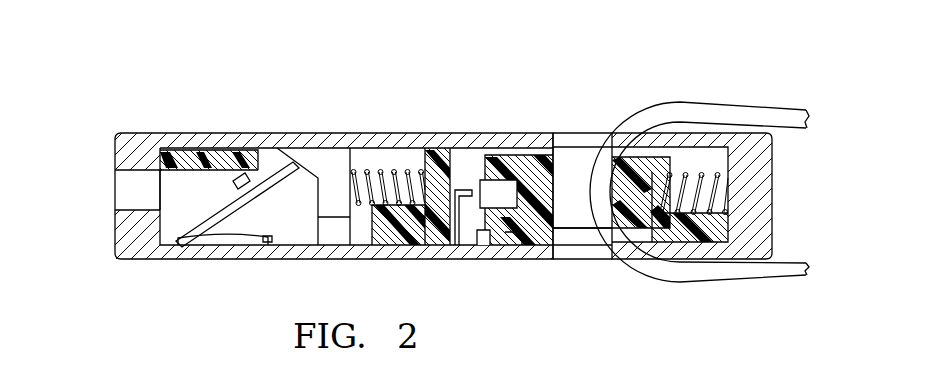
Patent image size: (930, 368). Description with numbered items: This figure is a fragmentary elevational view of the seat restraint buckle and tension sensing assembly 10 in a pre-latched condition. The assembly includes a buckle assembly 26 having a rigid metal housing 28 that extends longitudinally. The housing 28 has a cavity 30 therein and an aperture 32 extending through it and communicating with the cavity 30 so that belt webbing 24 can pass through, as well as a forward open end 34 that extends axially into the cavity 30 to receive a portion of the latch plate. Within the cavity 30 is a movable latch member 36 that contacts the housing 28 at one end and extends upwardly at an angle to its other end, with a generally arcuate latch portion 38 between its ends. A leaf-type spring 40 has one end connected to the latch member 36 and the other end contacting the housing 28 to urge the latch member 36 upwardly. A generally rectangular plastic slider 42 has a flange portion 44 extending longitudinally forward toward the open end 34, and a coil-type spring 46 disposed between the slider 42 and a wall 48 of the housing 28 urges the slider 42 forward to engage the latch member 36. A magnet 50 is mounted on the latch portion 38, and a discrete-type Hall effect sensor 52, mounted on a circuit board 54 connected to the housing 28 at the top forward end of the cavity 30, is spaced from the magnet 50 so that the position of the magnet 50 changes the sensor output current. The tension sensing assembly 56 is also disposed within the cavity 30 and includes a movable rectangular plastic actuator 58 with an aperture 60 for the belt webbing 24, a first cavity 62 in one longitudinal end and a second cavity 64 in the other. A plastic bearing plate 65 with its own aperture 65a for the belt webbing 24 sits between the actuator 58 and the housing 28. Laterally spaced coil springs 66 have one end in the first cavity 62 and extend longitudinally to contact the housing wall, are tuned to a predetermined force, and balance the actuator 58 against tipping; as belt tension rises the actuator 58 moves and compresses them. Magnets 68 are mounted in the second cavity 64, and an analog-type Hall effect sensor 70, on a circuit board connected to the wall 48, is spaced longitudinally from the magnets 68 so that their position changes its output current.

The seat restraint buckle and tension sensing assembly 10 is at (111, 98).
The belt webbing 24 is at (770, 110).
The buckle assembly 26 is at (186, 131).
The housing 28 is at (388, 140).
The cavity 30 is at (478, 140).
The aperture 32 is at (557, 140).
The forward open end 34 is at (136, 171).
The latch member 36 is at (207, 217).
The latch portion 38 is at (259, 181).
The spring 40 is at (220, 260).
The slider 42 is at (349, 178).
The flange portion 44 is at (318, 178).
The spring 46 is at (365, 190).
The wall 48 is at (440, 140).
The magnet 50 is at (242, 156).
The Hall effect sensor 52 is at (216, 138).
The circuit board 54 is at (157, 137).
The tension sensing assembly 56 is at (533, 140).
The actuator 58 is at (520, 230).
The aperture 60 is at (580, 137).
The first cavity 62 is at (668, 230).
The second cavity 64 is at (492, 238).
The bearing plate 65 is at (708, 228).
The aperture 65a is at (557, 230).
The springs 66 is at (692, 172).
The magnets 68 is at (495, 190).
The Hall effect sensor 70 is at (459, 190).